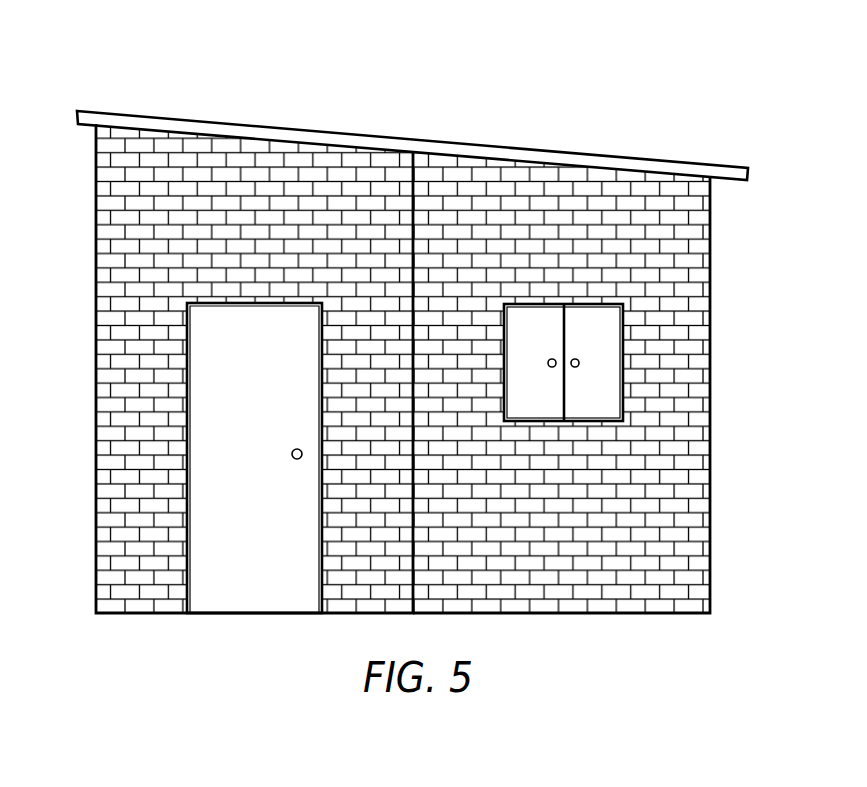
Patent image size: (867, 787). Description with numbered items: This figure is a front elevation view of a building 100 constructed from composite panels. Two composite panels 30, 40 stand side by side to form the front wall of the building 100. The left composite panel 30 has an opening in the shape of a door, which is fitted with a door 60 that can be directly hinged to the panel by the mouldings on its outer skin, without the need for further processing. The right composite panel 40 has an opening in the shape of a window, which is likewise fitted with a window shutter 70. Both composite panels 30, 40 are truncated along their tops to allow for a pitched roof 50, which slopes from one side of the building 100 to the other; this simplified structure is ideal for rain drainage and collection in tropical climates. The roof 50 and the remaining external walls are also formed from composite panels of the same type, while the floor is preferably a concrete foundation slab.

The building 100 is at (407, 314).
The composite panel 30 is at (147, 265).
The composite panel 40 is at (660, 264).
The pitched roof 50 is at (287, 135).
The door 60 is at (218, 467).
The window shutter 70 is at (597, 352).